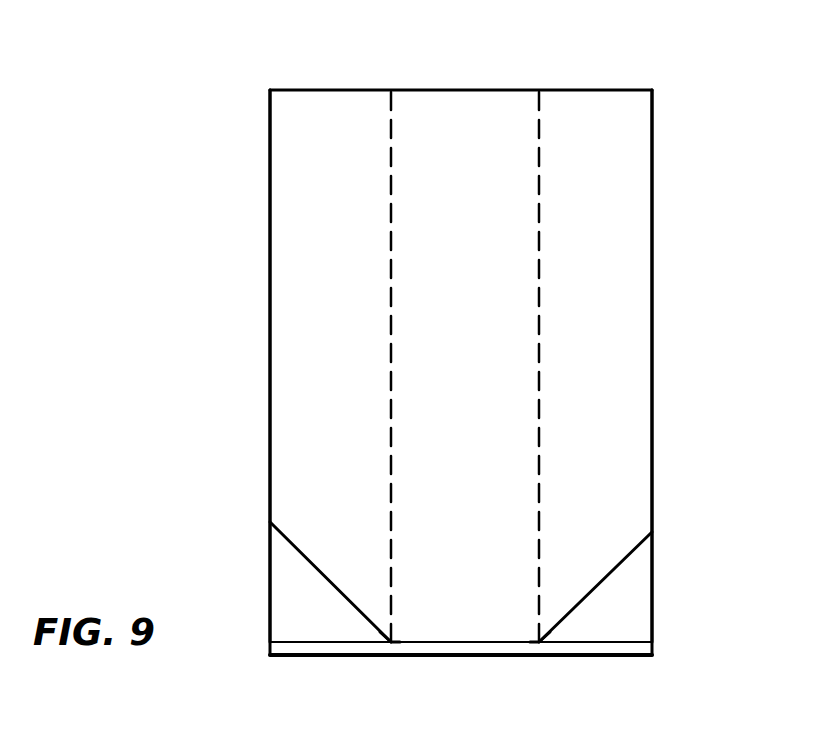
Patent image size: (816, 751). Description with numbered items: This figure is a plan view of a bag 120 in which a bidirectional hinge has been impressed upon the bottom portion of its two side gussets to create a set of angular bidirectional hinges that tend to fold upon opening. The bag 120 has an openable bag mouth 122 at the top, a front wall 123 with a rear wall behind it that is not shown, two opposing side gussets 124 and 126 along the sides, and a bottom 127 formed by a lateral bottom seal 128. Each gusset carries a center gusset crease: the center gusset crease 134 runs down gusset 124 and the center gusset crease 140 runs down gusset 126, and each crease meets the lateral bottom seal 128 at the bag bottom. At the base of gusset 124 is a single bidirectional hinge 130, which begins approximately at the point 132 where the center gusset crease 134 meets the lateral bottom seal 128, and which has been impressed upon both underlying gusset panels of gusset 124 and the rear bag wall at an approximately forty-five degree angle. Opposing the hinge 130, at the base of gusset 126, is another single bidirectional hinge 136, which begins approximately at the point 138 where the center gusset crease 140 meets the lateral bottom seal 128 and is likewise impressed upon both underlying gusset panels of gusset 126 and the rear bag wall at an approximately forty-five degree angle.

The bag 120 is at (658, 302).
The openable bag mouth 122 is at (497, 90).
The front wall 123 is at (488, 366).
The side gusset 124 is at (312, 217).
The side gusset 126 is at (605, 437).
The bottom 127 is at (448, 660).
The lateral bottom seal 128 is at (566, 648).
The bidirectional hinge 130 is at (302, 556).
The point 132 is at (380, 647).
The center gusset crease 134 is at (388, 562).
The bidirectional hinge 136 is at (617, 562).
The point 138 is at (543, 648).
The center gusset crease 140 is at (539, 533).